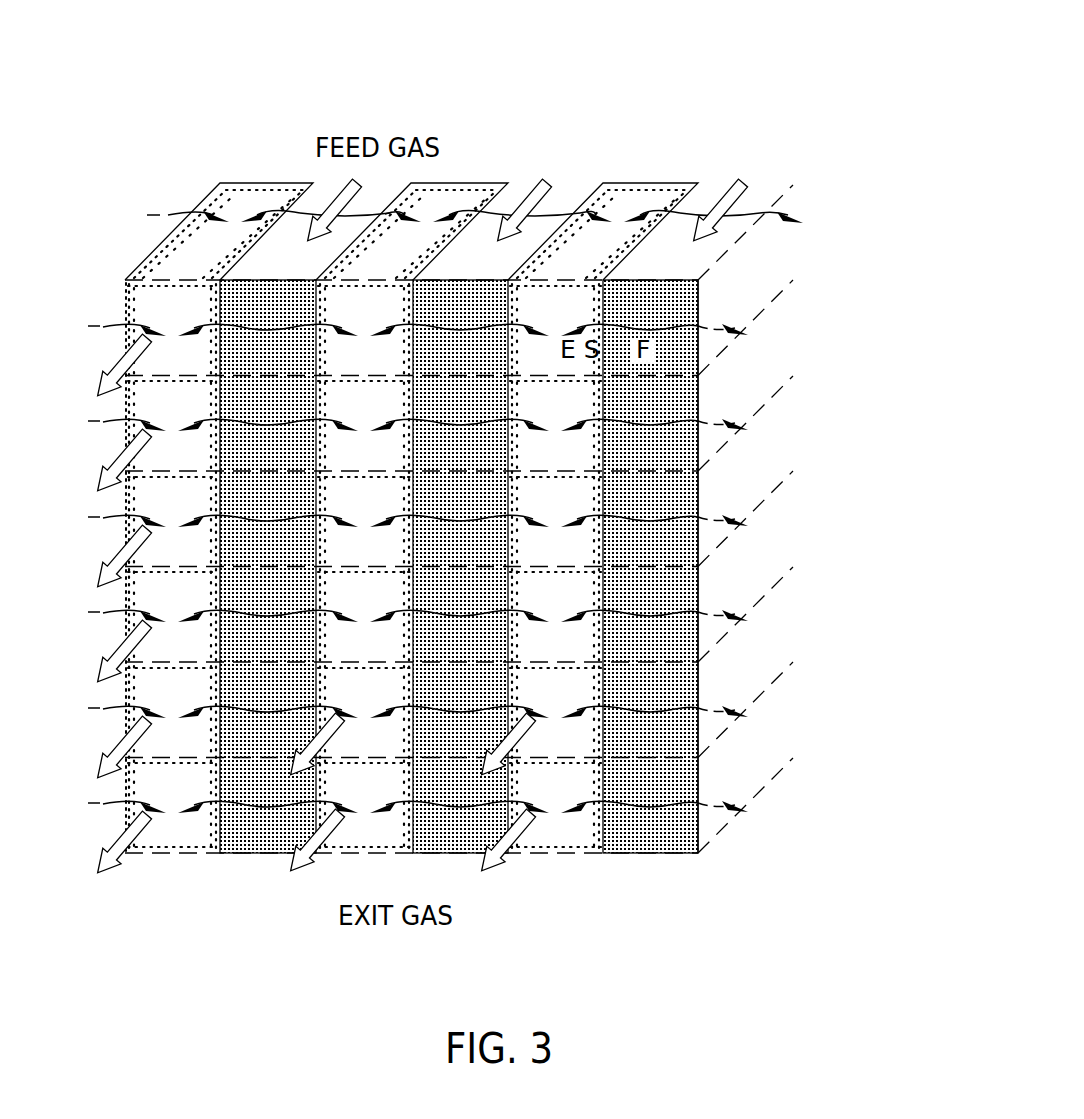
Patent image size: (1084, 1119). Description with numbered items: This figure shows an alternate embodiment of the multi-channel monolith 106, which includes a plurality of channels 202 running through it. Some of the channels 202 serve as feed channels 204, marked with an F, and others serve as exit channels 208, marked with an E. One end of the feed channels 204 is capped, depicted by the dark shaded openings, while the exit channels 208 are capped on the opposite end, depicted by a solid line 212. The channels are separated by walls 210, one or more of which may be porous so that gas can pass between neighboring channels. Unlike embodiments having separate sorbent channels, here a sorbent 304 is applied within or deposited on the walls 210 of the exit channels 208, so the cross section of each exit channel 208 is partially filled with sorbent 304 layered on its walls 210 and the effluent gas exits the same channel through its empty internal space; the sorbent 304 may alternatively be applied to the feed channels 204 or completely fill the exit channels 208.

The multi-channel monolith 106 is at (871, 28).
The channels 202 is at (554, 368).
The feed channels 204 is at (667, 297).
The exit channels 208 is at (192, 317).
The walls 210 is at (272, 186).
The solid line 212 is at (241, 184).
The sorbent 304 is at (131, 304).